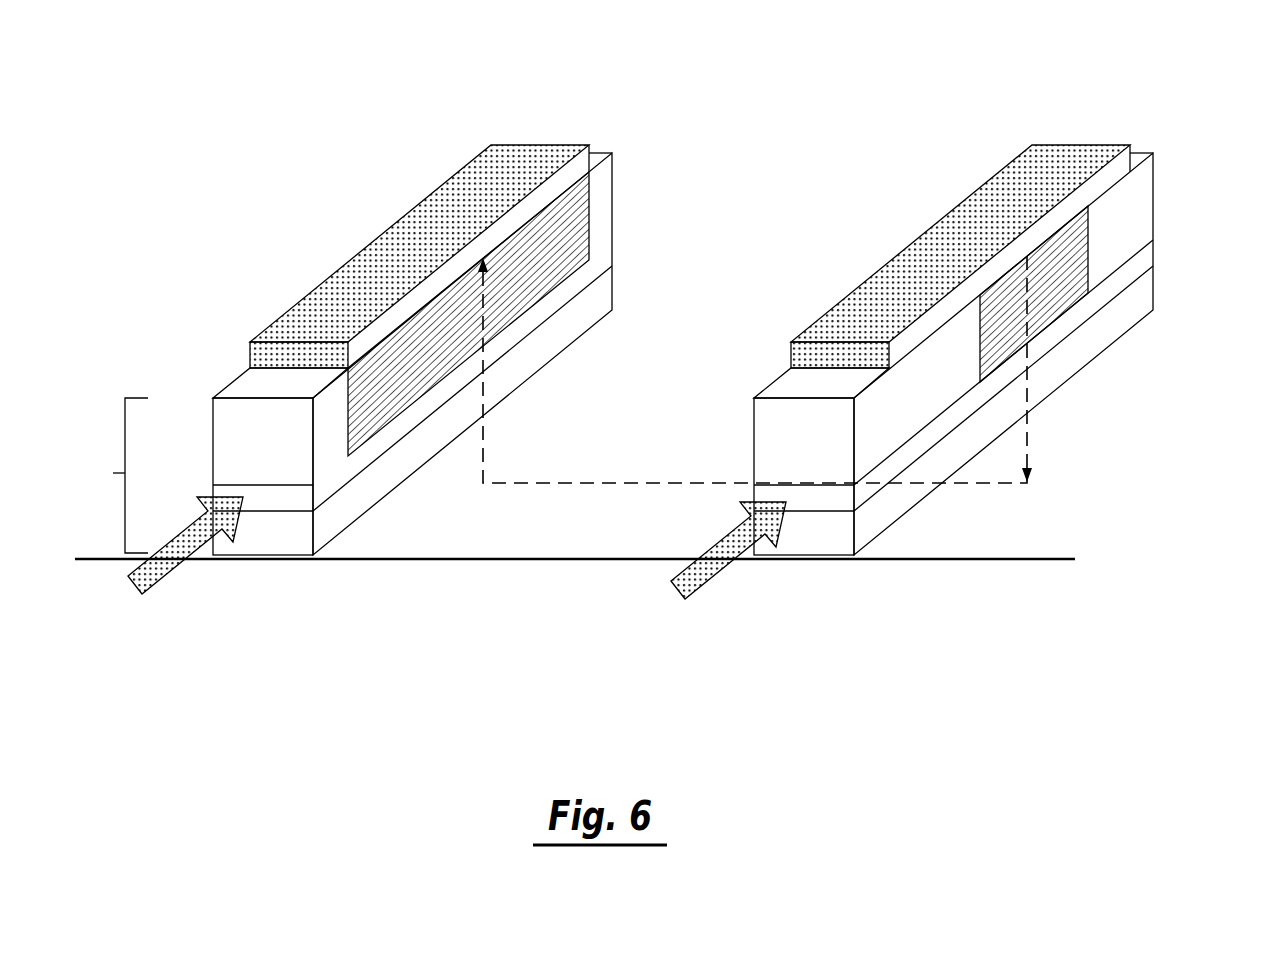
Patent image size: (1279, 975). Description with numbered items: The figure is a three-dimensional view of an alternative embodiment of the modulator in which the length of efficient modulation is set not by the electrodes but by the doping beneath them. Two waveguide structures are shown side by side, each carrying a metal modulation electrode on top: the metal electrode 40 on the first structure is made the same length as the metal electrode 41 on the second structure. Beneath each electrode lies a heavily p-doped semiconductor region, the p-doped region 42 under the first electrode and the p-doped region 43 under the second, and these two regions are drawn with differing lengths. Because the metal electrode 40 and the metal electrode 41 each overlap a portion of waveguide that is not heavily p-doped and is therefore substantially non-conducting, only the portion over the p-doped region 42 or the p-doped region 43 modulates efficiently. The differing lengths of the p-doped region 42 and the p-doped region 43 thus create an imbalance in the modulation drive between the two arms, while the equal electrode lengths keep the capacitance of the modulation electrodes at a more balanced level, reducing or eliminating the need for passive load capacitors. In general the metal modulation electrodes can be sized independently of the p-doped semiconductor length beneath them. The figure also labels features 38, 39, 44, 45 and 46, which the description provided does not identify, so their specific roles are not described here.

The thickness of the beam structure 38 is at (107, 475).
The applied force direction 39 is at (158, 578).
The metal electrode 40 is at (410, 250).
The metal electrode 41 is at (948, 253).
The p-doped region 42 is at (550, 250).
The p-doped region 43 is at (1063, 270).
The substrate surface 44 is at (488, 561).
The layer interface 45 is at (858, 486).
The electrical connection path 46 is at (1038, 440).